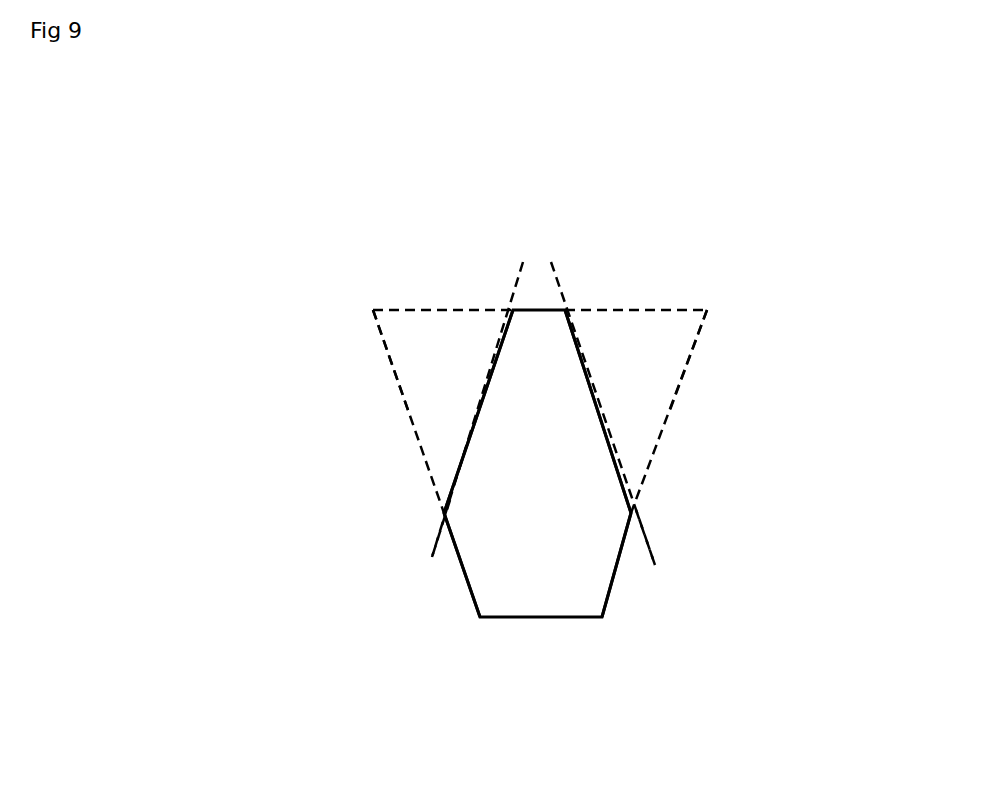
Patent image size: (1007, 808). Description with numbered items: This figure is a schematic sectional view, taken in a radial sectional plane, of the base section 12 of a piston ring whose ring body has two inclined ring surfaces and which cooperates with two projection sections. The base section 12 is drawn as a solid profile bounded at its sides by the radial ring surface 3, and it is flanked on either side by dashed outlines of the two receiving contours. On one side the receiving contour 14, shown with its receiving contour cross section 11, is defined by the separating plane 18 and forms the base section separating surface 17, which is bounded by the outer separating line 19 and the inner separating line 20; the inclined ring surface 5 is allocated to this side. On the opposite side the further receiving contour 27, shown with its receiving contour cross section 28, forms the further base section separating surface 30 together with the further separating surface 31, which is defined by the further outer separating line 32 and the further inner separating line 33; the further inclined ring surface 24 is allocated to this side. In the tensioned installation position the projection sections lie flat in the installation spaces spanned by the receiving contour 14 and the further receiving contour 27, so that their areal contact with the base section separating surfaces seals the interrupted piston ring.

The radial ring surface 3 is at (396, 307).
The inclined ring surface 5 is at (468, 580).
The receiving contour cross section 11 is at (363, 352).
The base section 12 is at (525, 532).
The receiving contour 14 is at (421, 361).
The base section separating surface 17 is at (457, 455).
The separating plane 18 is at (418, 555).
The outer separating line 19 is at (490, 292).
The inner separating line 20 is at (425, 507).
The further inclined ring surface 24 is at (617, 582).
The further receiving contour 27 is at (627, 364).
The receiving contour cross section 28 is at (690, 385).
The further base section separating surface 30 is at (610, 437).
The further separating surface 31 is at (663, 573).
The further outer separating line 32 is at (585, 290).
The further inner separating line 33 is at (670, 507).